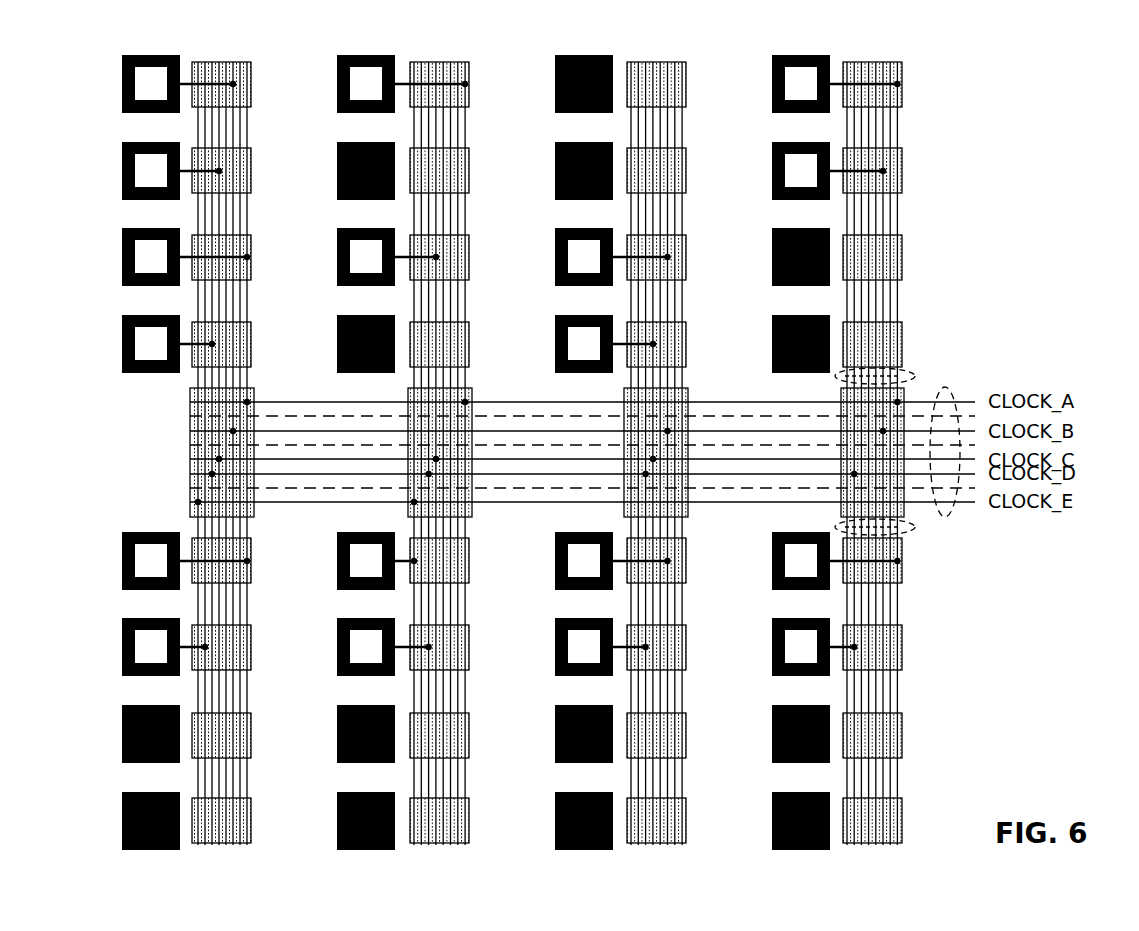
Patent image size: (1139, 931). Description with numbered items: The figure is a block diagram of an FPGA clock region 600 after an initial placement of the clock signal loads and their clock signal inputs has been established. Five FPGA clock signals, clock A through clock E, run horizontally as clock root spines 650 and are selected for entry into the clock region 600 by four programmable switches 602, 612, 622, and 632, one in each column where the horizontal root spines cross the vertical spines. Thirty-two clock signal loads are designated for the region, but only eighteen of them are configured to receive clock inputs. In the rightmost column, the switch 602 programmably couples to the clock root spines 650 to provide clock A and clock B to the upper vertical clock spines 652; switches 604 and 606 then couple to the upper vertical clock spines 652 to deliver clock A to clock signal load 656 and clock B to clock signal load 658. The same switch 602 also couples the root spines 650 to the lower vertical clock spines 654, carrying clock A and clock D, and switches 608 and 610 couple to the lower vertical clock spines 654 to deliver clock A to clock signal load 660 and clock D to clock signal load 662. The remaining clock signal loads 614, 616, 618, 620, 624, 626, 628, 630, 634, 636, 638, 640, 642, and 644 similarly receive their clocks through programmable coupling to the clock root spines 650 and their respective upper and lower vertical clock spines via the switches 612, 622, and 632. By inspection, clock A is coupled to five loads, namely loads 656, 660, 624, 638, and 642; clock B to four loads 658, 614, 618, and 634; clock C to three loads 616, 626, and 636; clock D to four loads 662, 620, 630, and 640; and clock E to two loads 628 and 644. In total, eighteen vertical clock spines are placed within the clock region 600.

The FPGA clock region 600 is at (1022, 137).
The programmable switch 602 is at (904, 518).
The switch 604 is at (900, 98).
The switch 606 is at (900, 185).
The switch 608 is at (902, 577).
The switch 610 is at (902, 662).
The programmable switch 612 is at (690, 518).
The clock signal load 614 is at (570, 228).
The clock signal load 616 is at (570, 315).
The clock signal load 618 is at (570, 532).
The clock signal load 620 is at (570, 620).
The programmable switch 622 is at (473, 518).
The clock signal load 624 is at (352, 113).
The clock signal load 626 is at (353, 228).
The clock signal load 628 is at (353, 532).
The clock signal load 630 is at (353, 620).
The programmable switch 632 is at (257, 518).
The clock signal load 634 is at (138, 113).
The clock signal load 636 is at (138, 200).
The clock signal load 638 is at (138, 287).
The clock signal load 640 is at (138, 373).
The clock signal load 642 is at (138, 592).
The clock signal load 644 is at (138, 677).
The clock root spines 650 is at (938, 388).
The upper vertical clock spines 652 is at (834, 379).
The lower vertical clock spines 654 is at (834, 523).
The clock signal load 656 is at (770, 98).
The clock signal load 658 is at (770, 185).
The clock signal load 660 is at (772, 558).
The clock signal load 662 is at (772, 643).